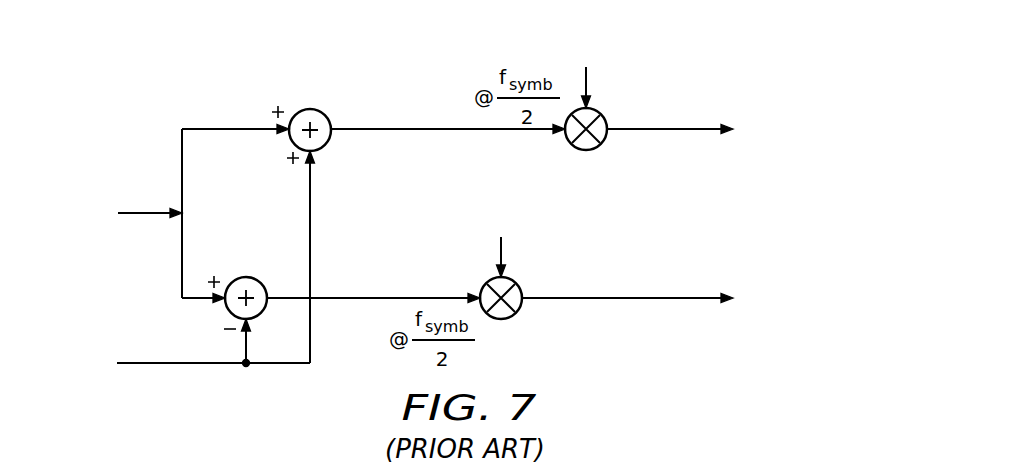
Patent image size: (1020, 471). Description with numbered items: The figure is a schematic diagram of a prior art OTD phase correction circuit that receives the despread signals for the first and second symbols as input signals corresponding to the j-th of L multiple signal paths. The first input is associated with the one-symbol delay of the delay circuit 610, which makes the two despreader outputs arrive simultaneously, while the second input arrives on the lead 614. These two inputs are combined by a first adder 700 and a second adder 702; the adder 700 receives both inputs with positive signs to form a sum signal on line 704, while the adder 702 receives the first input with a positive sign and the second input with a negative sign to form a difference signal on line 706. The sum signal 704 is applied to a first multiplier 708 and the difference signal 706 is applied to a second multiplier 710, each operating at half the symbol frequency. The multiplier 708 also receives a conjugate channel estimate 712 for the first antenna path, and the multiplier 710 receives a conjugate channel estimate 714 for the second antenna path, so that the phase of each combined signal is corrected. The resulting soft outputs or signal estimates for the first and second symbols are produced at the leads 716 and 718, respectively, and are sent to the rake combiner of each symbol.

The delay circuit 610 is at (156, 212).
The lead 614 is at (157, 366).
The first adder (summer) 700 is at (305, 108).
The second adder (subtractor) 702 is at (243, 277).
The sum signal 704 is at (393, 127).
The difference signal 706 is at (393, 296).
The first multiplier 708 is at (586, 150).
The second multiplier 710 is at (501, 319).
The conjugate channel estimate alpha1* 712 is at (588, 80).
The conjugate channel estimate alpha2* 714 is at (503, 249).
The lead 716 is at (668, 131).
The lead 718 is at (668, 300).